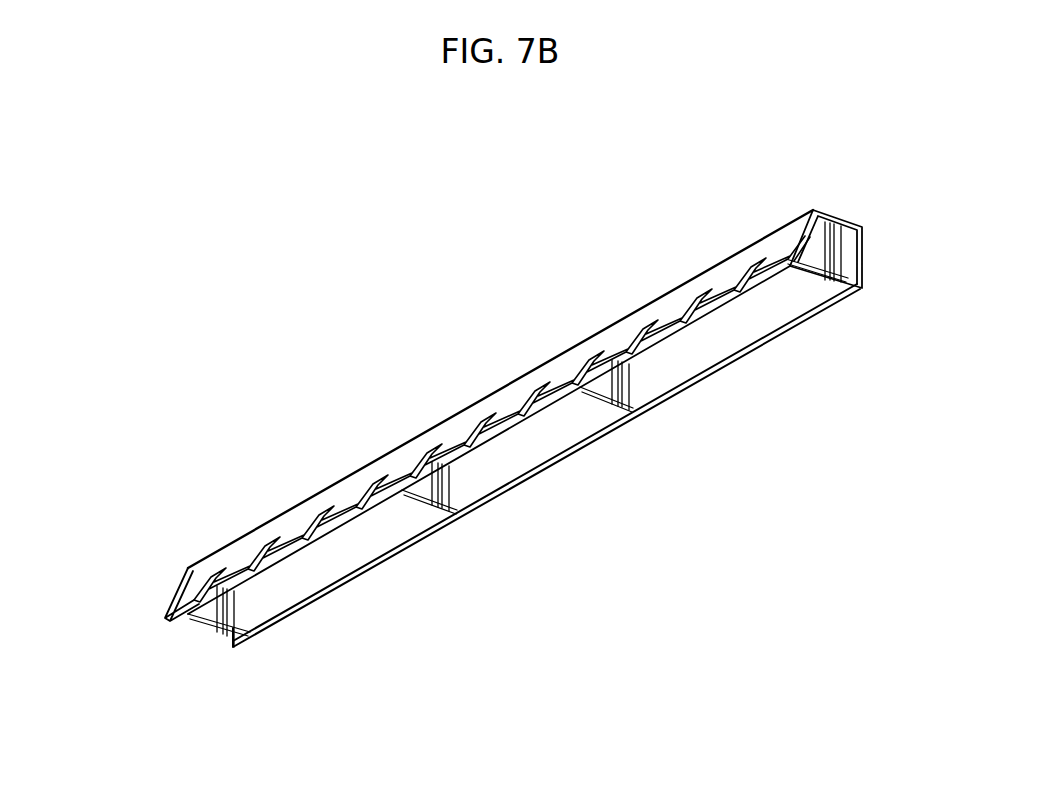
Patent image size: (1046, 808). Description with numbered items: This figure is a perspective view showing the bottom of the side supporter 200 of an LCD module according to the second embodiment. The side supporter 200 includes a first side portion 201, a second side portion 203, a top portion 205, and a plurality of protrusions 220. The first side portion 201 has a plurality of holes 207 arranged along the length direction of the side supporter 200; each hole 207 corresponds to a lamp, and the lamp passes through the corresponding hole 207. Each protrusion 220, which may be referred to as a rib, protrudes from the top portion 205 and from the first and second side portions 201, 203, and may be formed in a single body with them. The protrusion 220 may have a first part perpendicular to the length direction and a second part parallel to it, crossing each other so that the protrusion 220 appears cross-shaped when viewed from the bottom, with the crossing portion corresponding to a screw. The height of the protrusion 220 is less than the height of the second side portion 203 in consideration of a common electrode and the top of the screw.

The side supporter 200 is at (752, 198).
The first side portion 201 is at (182, 580).
The second side portion 203 is at (284, 604).
The top portion 205 is at (842, 210).
The holes 207 is at (702, 308).
The protrusions 220 is at (212, 626).